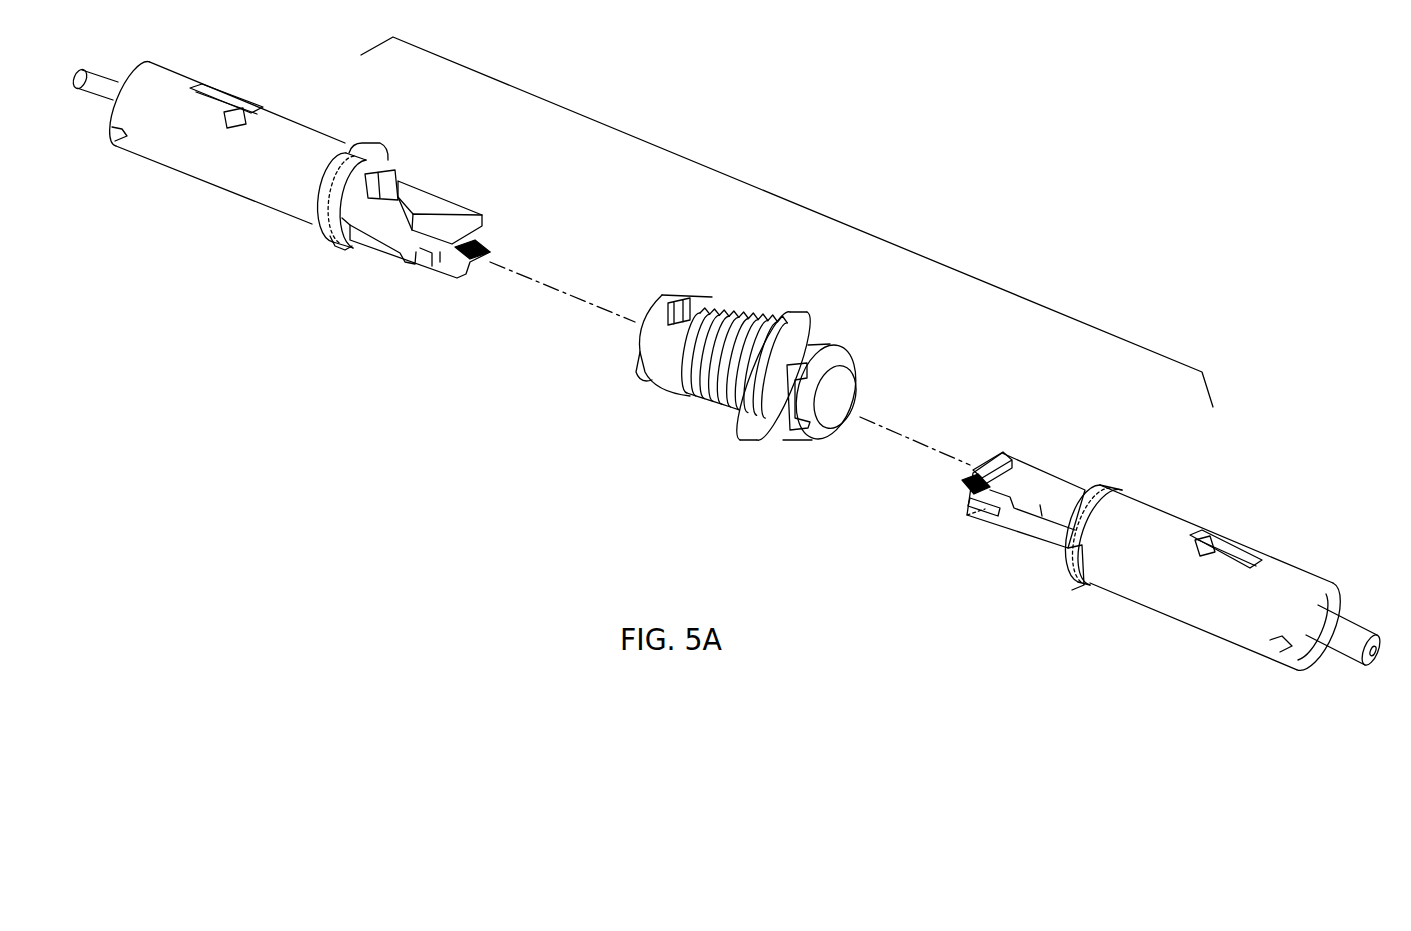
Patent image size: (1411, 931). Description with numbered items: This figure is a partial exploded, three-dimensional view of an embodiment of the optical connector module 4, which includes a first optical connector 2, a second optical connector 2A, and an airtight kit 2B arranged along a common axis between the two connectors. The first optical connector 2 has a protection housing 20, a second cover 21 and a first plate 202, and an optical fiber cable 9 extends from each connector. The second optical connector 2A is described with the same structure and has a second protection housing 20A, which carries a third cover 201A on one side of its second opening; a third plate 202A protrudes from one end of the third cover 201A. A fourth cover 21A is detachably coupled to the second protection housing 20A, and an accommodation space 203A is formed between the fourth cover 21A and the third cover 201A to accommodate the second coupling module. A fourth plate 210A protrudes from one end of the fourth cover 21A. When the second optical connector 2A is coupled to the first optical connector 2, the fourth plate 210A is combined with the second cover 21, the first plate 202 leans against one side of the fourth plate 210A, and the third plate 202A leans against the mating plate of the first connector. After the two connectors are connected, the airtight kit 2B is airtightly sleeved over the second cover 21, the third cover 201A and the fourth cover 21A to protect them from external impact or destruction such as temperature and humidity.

The first optical connector 2 is at (310, 180).
The first protection housing 20 is at (188, 67).
The second cover 21 is at (465, 203).
The first plate 202 is at (443, 280).
The optical fiber cable 9 is at (92, 84).
The optical connector module 4 is at (807, 206).
The airtight kit 2B is at (792, 298).
The second optical connector 2A is at (1107, 537).
The second protection housing 20A is at (1290, 558).
The third cover 201A is at (1056, 477).
The fourth cover 21A is at (1020, 552).
The third plate 202A is at (996, 455).
The accommodation space 203A is at (965, 508).
The fourth plate 210A is at (966, 516).